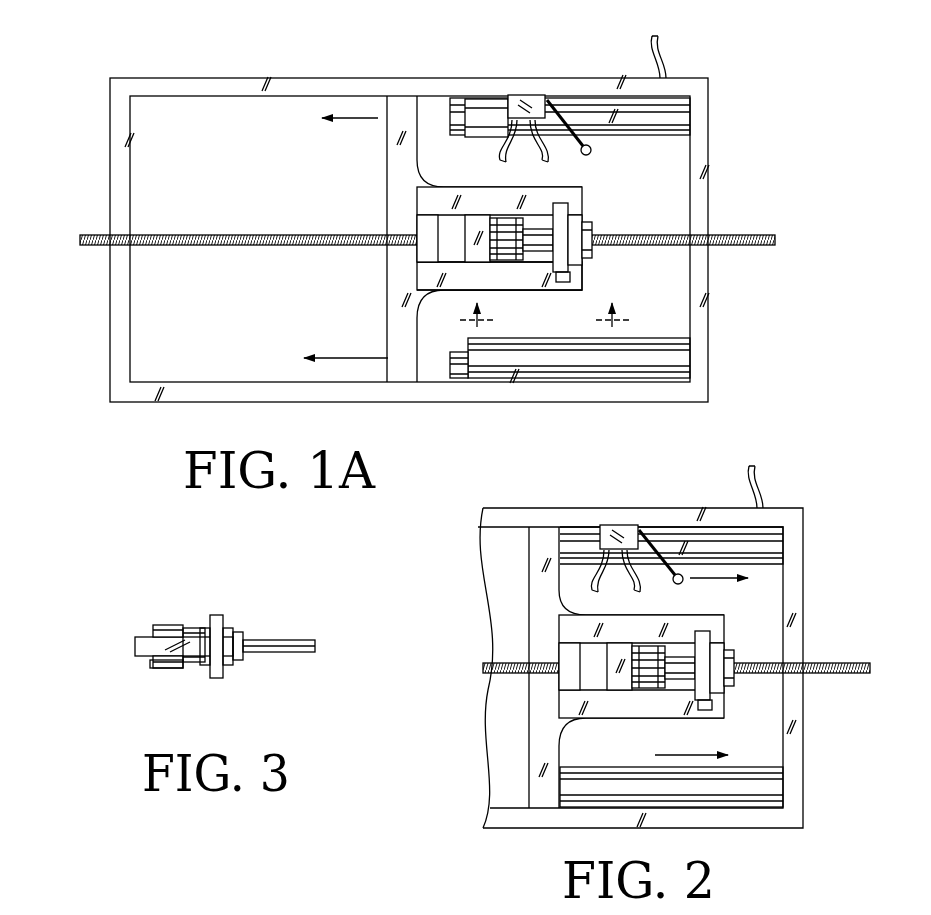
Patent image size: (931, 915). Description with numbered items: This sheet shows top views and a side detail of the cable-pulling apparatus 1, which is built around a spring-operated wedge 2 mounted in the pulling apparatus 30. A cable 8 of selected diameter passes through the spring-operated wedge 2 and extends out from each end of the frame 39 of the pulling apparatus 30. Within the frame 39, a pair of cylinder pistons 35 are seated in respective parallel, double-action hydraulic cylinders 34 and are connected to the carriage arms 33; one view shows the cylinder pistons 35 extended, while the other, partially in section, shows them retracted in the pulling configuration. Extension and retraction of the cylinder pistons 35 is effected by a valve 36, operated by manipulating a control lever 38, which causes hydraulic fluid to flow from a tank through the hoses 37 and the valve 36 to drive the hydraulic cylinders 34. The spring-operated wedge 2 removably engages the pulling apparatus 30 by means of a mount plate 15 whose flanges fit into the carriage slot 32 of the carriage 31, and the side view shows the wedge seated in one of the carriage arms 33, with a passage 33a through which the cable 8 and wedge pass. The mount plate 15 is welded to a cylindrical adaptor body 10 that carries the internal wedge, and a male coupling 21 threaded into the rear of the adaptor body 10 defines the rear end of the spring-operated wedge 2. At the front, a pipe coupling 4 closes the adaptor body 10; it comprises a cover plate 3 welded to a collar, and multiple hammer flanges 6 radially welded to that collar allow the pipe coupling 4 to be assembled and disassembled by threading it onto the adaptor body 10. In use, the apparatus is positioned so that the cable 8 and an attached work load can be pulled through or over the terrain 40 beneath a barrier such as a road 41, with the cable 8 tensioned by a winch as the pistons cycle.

In FIG. 1A, the cable-pulling apparatus 1 is at (494, 164).
In FIG. 2, the cable-pulling apparatus 1 is at (639, 580).
In FIG. 1A, the spring-operated wedge 2 is at (580, 204).
In FIG. 3, the spring-operated wedge 2 is at (230, 672).
In FIG. 2, the spring-operated wedge 2 is at (730, 634).
In FIG. 1A, the cover plate 3 is at (532, 312).
In FIG. 1A, the pipe coupling 4 is at (416, 249).
In FIG. 3, the pipe coupling 4 is at (158, 668).
In FIG. 2, the pipe coupling 4 is at (582, 680).
In FIG. 1A, the hammer flanges 6 is at (505, 240).
In FIG. 3, the hammer flanges 6 is at (176, 625).
In FIG. 2, the hammer flanges 6 is at (647, 668).
In FIG. 1A, the cable 8 is at (232, 237).
In FIG. 3, the cable 8 is at (262, 640).
In FIG. 2, the cable 8 is at (496, 663).
In FIG. 1A, the adaptor body 10 is at (593, 258).
In FIG. 3, the adaptor body 10 is at (196, 666).
In FIG. 2, the adaptor body 10 is at (742, 688).
In FIG. 3, the mount plate 15 is at (210, 616).
In FIG. 2, the mount plate 15 is at (708, 634).
In FIG. 1A, the male coupling 21 is at (592, 222).
In FIG. 3, the male coupling 21 is at (246, 664).
In FIG. 2, the male coupling 21 is at (738, 654).
In FIG. 1A, the cable-pulling apparatus 30 is at (386, 68).
In FIG. 2, the cable-pulling apparatus 30 is at (550, 490).
In FIG. 1A, the carriage 31 is at (586, 282).
In FIG. 1A, the carriage slot 32 is at (564, 282).
In FIG. 2, the carriage slot 32 is at (705, 710).
In FIG. 1A, the carriage arms 33 is at (412, 200).
In FIG. 3, the carriage arms 33 is at (145, 648).
In FIG. 2, the carriage arms 33 is at (545, 598).
In FIG. 1A, the wall passage 33a is at (464, 224).
In FIG. 2, the wall passage 33a is at (606, 652).
In FIG. 1A, the hydraulic cylinders 34 is at (666, 112).
In FIG. 2, the hydraulic cylinders 34 is at (768, 550).
In FIG. 1A, the cylinder pistons 35 is at (446, 104).
In FIG. 1A, the valve 36 is at (522, 94).
In FIG. 2, the valve 36 is at (617, 524).
In FIG. 1A, the hoses 37 is at (671, 50).
In FIG. 2, the hoses 37 is at (768, 480).
In FIG. 1A, the control lever 38 is at (568, 98).
In FIG. 2, the control lever 38 is at (660, 528).
In FIG. 1A, the frame 39 is at (182, 73).
In FIG. 2, the frame 39 is at (640, 667).
In FIG. 2, the terrain 40 is at (116, 905).
In FIG. 2, the road 41 is at (402, 914).